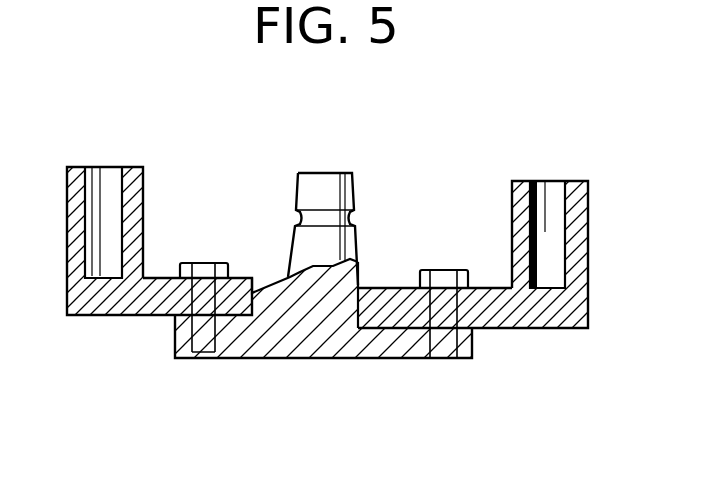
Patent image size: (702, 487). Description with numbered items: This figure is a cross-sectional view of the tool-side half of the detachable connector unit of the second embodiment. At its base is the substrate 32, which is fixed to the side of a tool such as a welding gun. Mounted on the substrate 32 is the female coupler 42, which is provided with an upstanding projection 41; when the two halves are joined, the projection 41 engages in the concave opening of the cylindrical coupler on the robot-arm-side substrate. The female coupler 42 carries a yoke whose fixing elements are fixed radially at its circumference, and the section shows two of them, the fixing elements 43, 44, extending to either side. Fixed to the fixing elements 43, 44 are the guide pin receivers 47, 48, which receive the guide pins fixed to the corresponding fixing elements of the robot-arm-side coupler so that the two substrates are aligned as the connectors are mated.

The substrate 32 is at (303, 357).
The projection 41 is at (332, 200).
The female coupler 42 is at (272, 300).
The fixing element 43 is at (98, 302).
The fixing element 44 is at (505, 320).
The guide pin receiver 47 is at (80, 167).
The guide pin receiver 48 is at (527, 178).